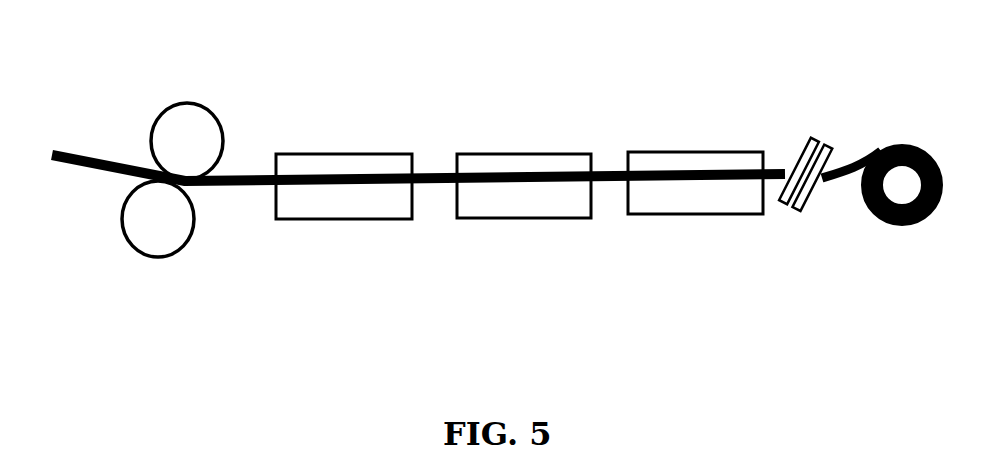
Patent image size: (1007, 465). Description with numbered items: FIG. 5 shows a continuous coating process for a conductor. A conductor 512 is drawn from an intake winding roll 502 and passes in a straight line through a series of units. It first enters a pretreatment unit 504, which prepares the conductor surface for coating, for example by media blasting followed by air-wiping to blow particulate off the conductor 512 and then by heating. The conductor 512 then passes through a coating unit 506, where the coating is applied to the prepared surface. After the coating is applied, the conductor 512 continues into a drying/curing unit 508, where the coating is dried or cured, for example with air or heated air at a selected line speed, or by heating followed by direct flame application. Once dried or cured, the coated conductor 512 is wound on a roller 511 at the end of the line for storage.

The intake winding roll 502 is at (175, 135).
The pretreatment unit 504 is at (348, 205).
The coating unit 506 is at (507, 160).
The drying/curing unit 508 is at (667, 190).
The roller 511 is at (885, 140).
The conductor 512 is at (247, 173).